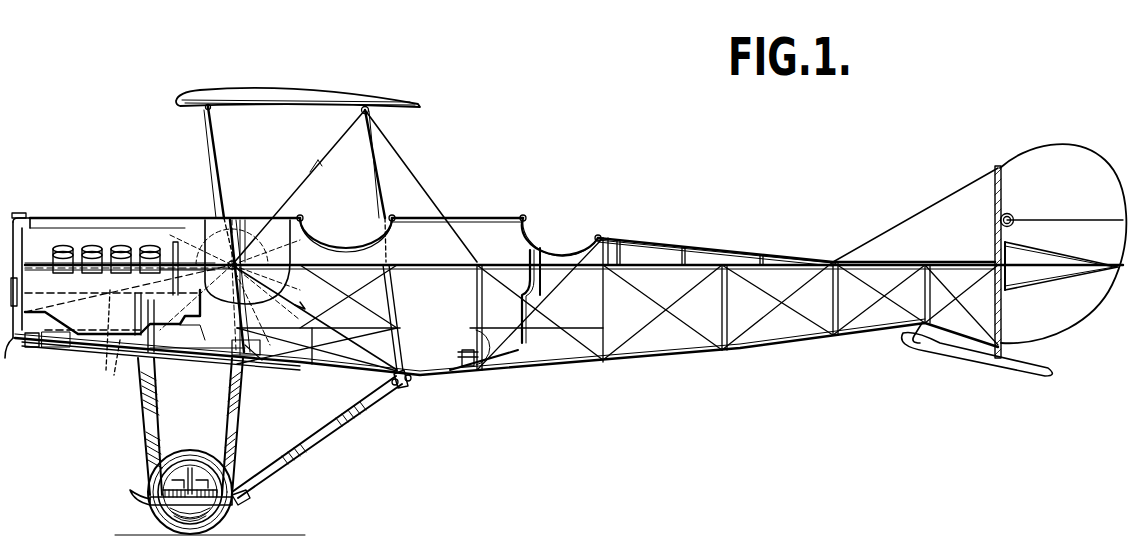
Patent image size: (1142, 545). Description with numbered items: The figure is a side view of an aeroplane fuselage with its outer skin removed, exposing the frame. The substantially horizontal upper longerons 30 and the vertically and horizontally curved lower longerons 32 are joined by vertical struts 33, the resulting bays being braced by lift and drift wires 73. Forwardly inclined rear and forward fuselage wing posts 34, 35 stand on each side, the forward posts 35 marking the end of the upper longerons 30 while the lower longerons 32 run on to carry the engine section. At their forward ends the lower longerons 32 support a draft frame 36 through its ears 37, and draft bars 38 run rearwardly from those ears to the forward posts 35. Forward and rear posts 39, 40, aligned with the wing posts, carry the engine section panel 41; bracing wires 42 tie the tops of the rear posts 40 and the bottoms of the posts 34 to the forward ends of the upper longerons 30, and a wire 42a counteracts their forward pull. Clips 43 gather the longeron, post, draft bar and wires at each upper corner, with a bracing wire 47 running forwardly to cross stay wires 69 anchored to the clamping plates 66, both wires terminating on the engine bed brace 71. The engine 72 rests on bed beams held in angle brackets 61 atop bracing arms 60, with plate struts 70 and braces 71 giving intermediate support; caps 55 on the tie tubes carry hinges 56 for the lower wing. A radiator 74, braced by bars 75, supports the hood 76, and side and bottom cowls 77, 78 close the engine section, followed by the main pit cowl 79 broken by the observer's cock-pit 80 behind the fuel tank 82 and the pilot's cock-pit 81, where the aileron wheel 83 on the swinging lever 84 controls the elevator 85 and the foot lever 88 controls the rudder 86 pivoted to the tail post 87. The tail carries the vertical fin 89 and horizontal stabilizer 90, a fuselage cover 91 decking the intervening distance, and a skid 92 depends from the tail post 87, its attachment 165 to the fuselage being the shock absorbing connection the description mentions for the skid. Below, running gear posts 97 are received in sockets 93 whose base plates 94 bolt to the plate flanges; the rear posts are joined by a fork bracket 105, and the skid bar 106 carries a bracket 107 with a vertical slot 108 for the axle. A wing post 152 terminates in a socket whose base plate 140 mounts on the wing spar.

The upper longeron 30 is at (470, 267).
The lower longeron 32 is at (557, 366).
The vertical strut 33 is at (476, 312).
The rear fuselage wing post 34 is at (386, 302).
The forward fuselage wing post 35 is at (242, 317).
The draft frame 36 is at (12, 345).
The ear of draft frame 37 is at (32, 348).
The draft bar 38 is at (55, 348).
The forward engine panel post 39 is at (221, 169).
The rear engine panel post 40 is at (377, 163).
The engine section panel 41 is at (305, 95).
The bracing wire 42 is at (308, 173).
The counteracting wire 42a is at (430, 195).
The clip 43 is at (246, 261).
The bracing wire 47 is at (176, 365).
The cap 55 is at (104, 378).
The hinge 56 is at (412, 378).
The bracing arm 60 is at (228, 364).
The angle bracket 61 is at (238, 328).
The clamping plate 66 is at (258, 364).
The stay wire 69 is at (198, 355).
The engine bed strut 70 is at (160, 352).
The engine bed brace 71 is at (112, 362).
The engine 72 is at (74, 290).
The lift and drift wires 73 is at (655, 319).
The radiator 74 is at (22, 226).
The radiator brace bar 75 is at (33, 264).
The hood 76 is at (135, 220).
The side cowl 77 is at (188, 230).
The bottom cowl 78 is at (88, 366).
The main pit cowl 79 is at (497, 222).
The observer's cock-pit 80 is at (335, 248).
The pilot's cock-pit 81 is at (555, 248).
The fuel tank 82 is at (249, 222).
The aileron controlling wheel 83 is at (578, 250).
The swinging lever 84 is at (530, 299).
The elevator 85 is at (1050, 278).
The rudder 86 is at (1012, 217).
The tail post 87 is at (990, 332).
The foot lever 88 is at (485, 367).
The vertical fin 89 is at (979, 243).
The horizontal stabilizer 90 is at (853, 260).
The fuselage cover 91 is at (673, 248).
The skid 92 is at (1020, 369).
The running gear socket 93 is at (396, 388).
The base plate 94 is at (372, 418).
The running gear post 97 is at (146, 448).
The fork bracket 105 is at (242, 503).
The skid bar 106 is at (140, 503).
The axle bracket 107 is at (193, 470).
The vertical slot 108 is at (165, 479).
The wing post socket base plate 140 is at (370, 108).
The wing post 152 is at (210, 163).
The skid strut 165 is at (926, 346).